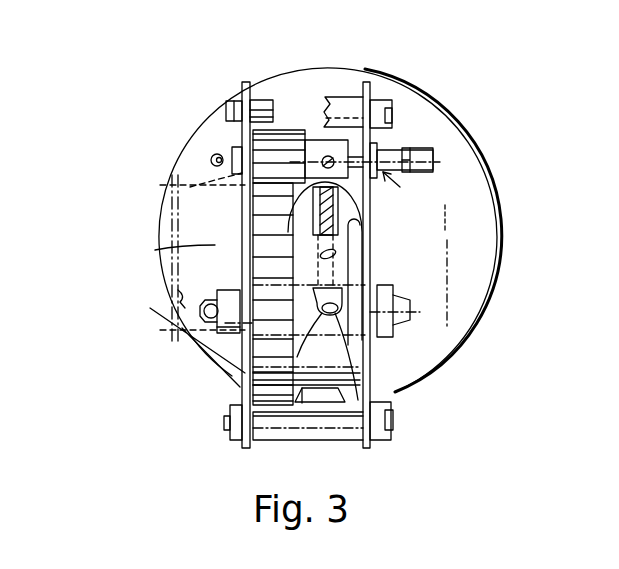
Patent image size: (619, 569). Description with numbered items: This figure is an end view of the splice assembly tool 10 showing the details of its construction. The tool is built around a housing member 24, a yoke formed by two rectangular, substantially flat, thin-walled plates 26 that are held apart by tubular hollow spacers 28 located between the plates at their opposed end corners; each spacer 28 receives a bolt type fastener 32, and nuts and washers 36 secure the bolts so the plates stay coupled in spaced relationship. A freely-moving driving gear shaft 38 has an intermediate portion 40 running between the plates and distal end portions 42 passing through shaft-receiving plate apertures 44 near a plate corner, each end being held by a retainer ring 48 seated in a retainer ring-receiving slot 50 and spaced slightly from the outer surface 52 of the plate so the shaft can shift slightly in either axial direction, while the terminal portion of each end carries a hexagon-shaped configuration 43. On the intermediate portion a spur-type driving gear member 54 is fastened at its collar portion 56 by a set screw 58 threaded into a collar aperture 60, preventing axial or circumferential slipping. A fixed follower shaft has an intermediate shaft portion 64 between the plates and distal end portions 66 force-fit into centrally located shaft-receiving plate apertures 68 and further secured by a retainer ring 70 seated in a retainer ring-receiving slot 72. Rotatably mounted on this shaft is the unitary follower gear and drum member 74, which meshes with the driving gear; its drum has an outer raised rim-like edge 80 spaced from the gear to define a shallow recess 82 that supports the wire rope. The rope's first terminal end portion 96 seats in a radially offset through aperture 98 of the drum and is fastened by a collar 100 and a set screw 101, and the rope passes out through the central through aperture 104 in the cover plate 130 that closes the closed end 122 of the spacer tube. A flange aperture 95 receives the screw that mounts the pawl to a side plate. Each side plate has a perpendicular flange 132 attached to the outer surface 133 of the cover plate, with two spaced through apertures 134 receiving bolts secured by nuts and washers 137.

The splice assembly tool 10 is at (497, 105).
The housing member 24 is at (225, 390).
The plates 26 is at (243, 108).
The spacers 28 is at (340, 102).
The bolt type fastener 32 is at (263, 104).
The nuts and washers 36 is at (380, 106).
The driving gear shaft 38 is at (400, 187).
The intermediate portion 40 is at (397, 152).
The distal end portion 42 is at (415, 130).
The hexagon-shaped configuration 43 is at (440, 158).
The shaft-receiving plate aperture 44 is at (142, 194).
The retainer ring 48 is at (336, 252).
The retainer ring-receiving slot 50 is at (200, 113).
The outer surface 52 is at (352, 285).
The driving gear member 54 is at (291, 126).
The collar portion 56 is at (315, 140).
The set screw 58 is at (251, 220).
The collar aperture 60 is at (196, 185).
The intermediate shaft portion 64 is at (350, 340).
The distal end portion 66 is at (444, 355).
The shaft-receiving plate aperture 68 is at (200, 326).
The retainer ring 70 is at (237, 352).
The retainer ring-receiving slot 72 is at (412, 302).
The follower gear and drum member 74 is at (307, 390).
The raised rim-like edge 80 is at (382, 400).
The shallow recess 82 is at (335, 395).
The flange aperture 95 is at (228, 104).
The first terminal end portion 96 is at (313, 290).
The through aperture 98 is at (250, 385).
The collar 100 is at (365, 372).
The set screw 101 is at (365, 250).
The through aperture 104 is at (210, 237).
The closed end 122 is at (475, 212).
The cover plate 130 is at (155, 250).
The flange 132 is at (240, 132).
The outer surface 133 is at (205, 300).
The through apertures 134 is at (236, 150).
The nuts and washers 137 is at (453, 310).